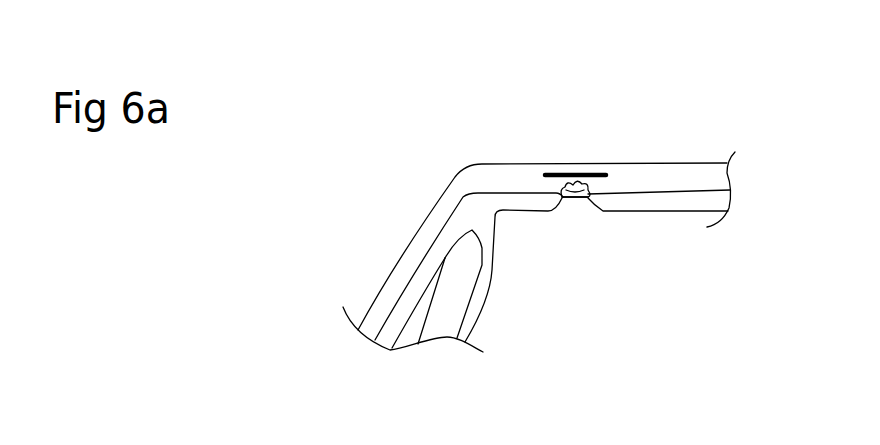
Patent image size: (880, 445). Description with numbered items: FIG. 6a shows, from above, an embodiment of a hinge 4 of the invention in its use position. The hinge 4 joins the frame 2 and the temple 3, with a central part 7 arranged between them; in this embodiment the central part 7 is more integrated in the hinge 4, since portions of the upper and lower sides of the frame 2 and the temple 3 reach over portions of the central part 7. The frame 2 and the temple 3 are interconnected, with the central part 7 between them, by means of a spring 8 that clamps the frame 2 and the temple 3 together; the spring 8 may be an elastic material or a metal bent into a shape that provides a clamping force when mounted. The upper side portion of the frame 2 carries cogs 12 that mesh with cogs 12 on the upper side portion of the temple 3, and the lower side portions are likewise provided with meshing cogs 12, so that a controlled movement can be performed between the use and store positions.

The frame 2 is at (420, 237).
The temple 3 is at (660, 166).
The hinge 4 is at (583, 167).
The central part 7 is at (577, 198).
The spring 8 is at (571, 172).
The cogs 12 is at (574, 180).